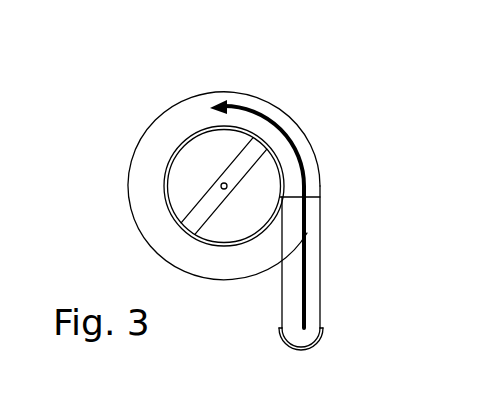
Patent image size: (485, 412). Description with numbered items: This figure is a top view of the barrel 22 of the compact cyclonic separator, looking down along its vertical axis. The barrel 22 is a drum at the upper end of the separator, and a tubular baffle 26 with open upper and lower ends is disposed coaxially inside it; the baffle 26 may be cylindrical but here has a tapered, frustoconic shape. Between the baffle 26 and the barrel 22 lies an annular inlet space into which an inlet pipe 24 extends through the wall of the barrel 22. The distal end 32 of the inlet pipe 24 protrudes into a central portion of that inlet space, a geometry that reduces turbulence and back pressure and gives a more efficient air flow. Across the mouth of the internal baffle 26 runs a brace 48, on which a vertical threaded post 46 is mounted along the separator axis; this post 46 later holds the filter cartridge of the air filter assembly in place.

The barrel 22 is at (147, 247).
The inlet pipe 24 is at (282, 310).
The tubular baffle 26 is at (278, 175).
The distal end 32 is at (321, 198).
The vertical threaded post 46 is at (222, 181).
The brace 48 is at (212, 202).